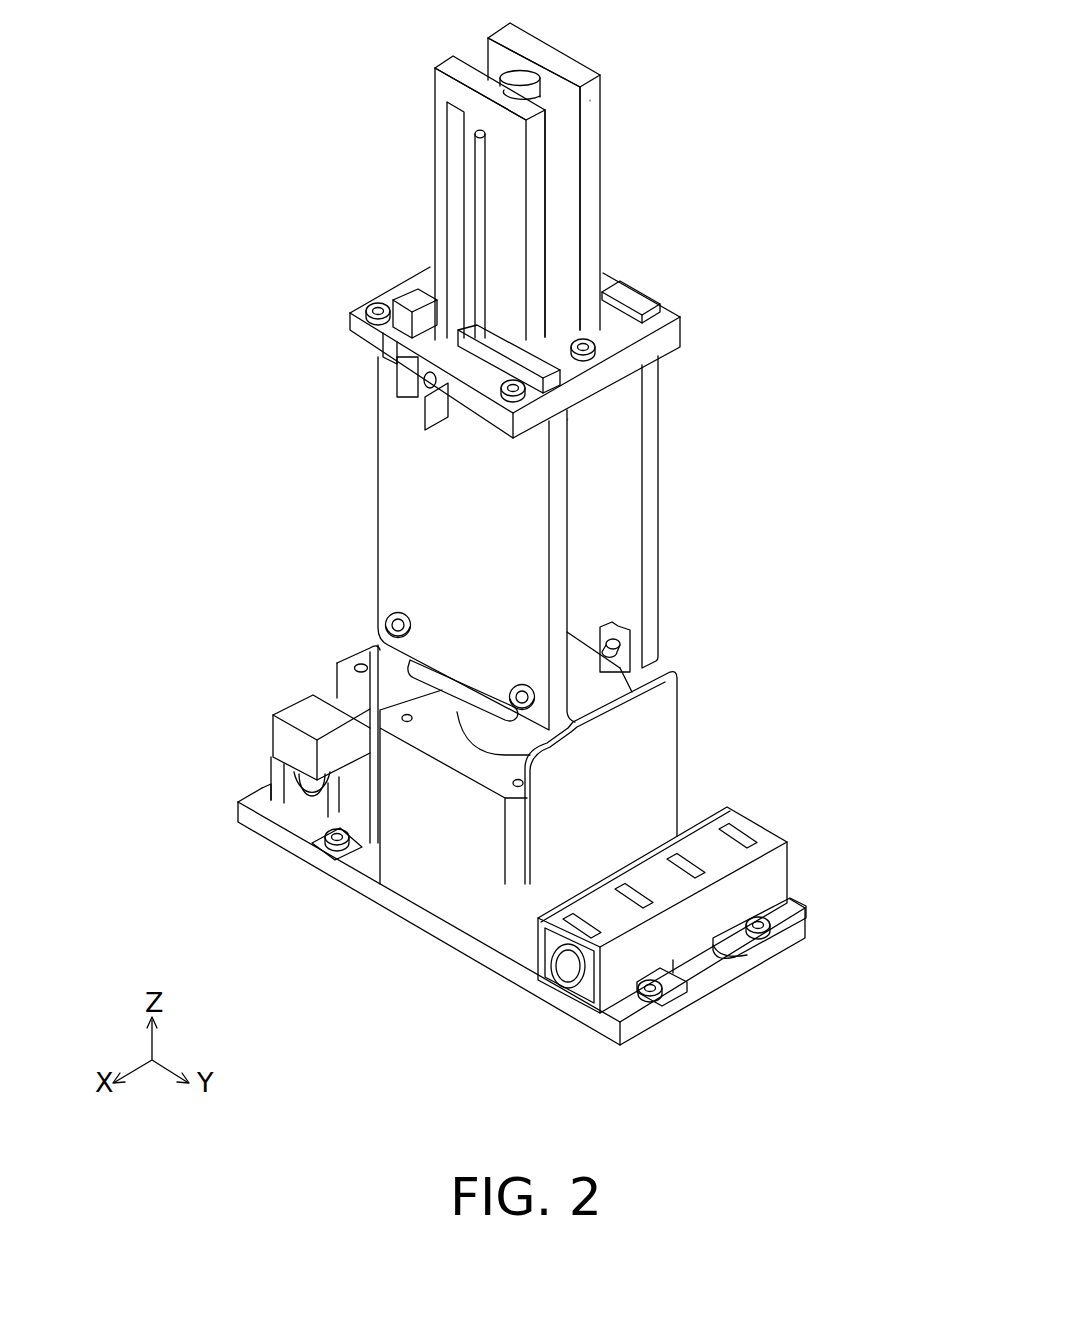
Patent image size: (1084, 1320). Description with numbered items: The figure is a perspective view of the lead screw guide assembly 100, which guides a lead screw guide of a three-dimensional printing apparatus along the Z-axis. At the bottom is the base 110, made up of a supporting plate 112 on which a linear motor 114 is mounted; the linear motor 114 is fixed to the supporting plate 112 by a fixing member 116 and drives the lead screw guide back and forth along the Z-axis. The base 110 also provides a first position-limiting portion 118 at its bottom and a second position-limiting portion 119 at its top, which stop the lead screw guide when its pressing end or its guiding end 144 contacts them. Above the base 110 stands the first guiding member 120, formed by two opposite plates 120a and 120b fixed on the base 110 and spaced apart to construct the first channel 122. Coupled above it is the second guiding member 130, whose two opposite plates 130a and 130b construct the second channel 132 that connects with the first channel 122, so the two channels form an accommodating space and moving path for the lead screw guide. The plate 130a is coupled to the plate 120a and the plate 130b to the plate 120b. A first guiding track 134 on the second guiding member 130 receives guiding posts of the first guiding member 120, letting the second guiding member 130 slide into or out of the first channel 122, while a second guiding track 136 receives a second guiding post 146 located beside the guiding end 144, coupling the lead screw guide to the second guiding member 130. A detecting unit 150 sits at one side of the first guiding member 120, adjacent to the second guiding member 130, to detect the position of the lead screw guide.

The lead screw guide assembly 100 is at (902, 1095).
The base 110 is at (347, 1021).
The supporting plate 112 is at (290, 820).
The linear motor 114 is at (427, 865).
The fixing member 116 is at (560, 862).
The first position-limiting portion 118 is at (521, 1007).
The second position-limiting portion 119 is at (600, 682).
The first guiding member 120 is at (741, 455).
The plate 120a is at (558, 572).
The plate 120b is at (645, 486).
The first channel 122 is at (612, 526).
The second guiding member 130 is at (686, 118).
The plate 130a is at (537, 231).
The plate 130b is at (592, 146).
The second channel 132 is at (558, 188).
The first guiding track 134 is at (453, 161).
The second guiding track 136 is at (478, 211).
The guiding end 144 is at (511, 78).
The second guiding post 146 is at (474, 128).
The detecting unit 150 is at (413, 306).